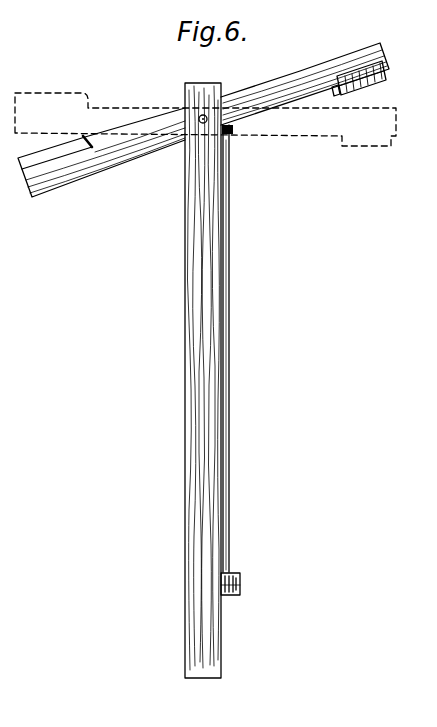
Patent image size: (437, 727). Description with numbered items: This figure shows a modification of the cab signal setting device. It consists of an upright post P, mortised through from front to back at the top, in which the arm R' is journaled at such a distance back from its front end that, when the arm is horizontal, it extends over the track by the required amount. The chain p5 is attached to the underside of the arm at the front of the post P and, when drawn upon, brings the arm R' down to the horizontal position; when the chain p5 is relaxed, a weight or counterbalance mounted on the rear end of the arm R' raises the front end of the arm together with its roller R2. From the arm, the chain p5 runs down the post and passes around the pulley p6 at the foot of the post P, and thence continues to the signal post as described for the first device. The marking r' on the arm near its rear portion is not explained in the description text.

The post P is at (193, 352).
The chain p5 is at (230, 371).
The pulley p6 is at (237, 593).
The arm R' is at (305, 84).
The block on rail r' is at (101, 152).
The roller R2 is at (367, 81).